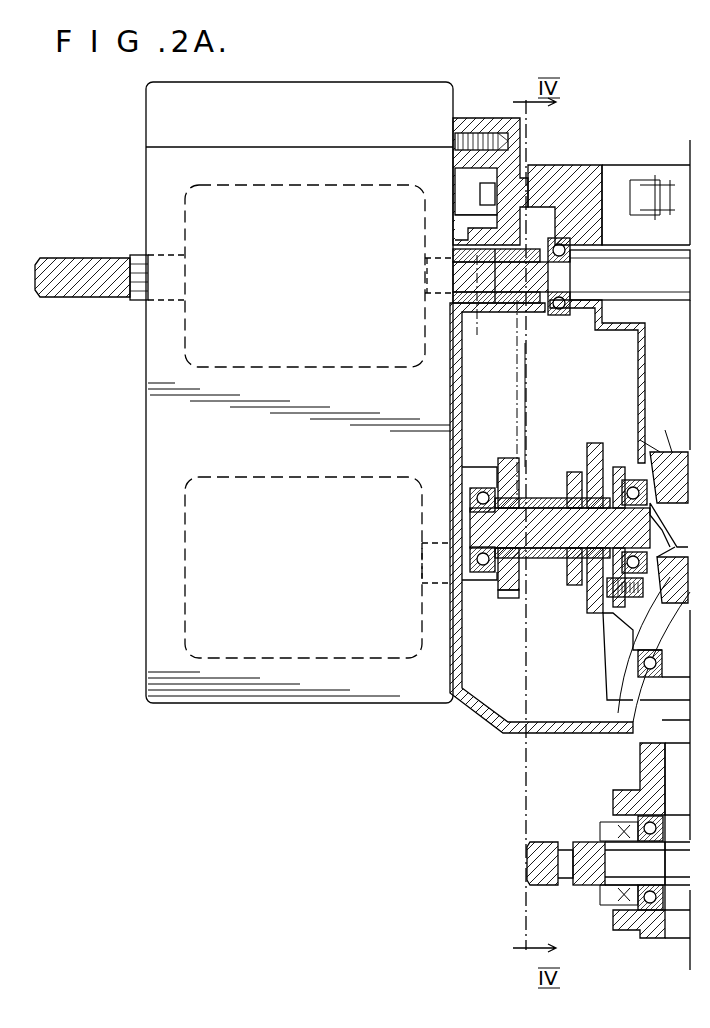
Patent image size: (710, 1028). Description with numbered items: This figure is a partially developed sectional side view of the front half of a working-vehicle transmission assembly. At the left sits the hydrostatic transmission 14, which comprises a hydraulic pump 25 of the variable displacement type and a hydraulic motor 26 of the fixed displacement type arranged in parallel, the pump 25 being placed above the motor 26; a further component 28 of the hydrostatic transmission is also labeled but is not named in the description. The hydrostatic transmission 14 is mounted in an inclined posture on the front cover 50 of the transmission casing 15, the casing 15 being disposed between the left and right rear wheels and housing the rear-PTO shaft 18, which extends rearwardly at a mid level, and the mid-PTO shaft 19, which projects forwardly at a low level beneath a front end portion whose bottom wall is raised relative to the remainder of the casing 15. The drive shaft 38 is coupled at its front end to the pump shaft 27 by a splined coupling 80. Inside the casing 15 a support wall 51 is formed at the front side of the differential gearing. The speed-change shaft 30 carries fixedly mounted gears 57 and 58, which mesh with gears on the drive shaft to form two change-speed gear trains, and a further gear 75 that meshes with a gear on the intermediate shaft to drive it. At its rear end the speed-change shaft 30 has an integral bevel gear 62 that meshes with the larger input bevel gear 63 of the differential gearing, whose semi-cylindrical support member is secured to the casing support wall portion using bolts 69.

The hydrostatic transmission 14 is at (230, 695).
The transmission casing 15 is at (670, 940).
The rear-PTO shaft 18 is at (665, 688).
The mid-PTO shaft 19 is at (620, 860).
The hydraulic pump 25 is at (185, 215).
The hydraulic motor 26 is at (305, 640).
The pump shaft 27 is at (472, 270).
The lead wire 28 is at (437, 565).
The speed-change shaft 30 is at (553, 545).
The drive shaft 38 is at (637, 268).
The front cover 50 is at (447, 660).
The support wall 51 is at (648, 365).
The gear 57 is at (593, 443).
The gear 58 is at (507, 458).
The bevel gear 62 is at (620, 467).
The input bevel gear 63 is at (635, 592).
The bolts 69 is at (662, 455).
The gear 75 is at (572, 472).
The splined coupling 80 is at (530, 305).